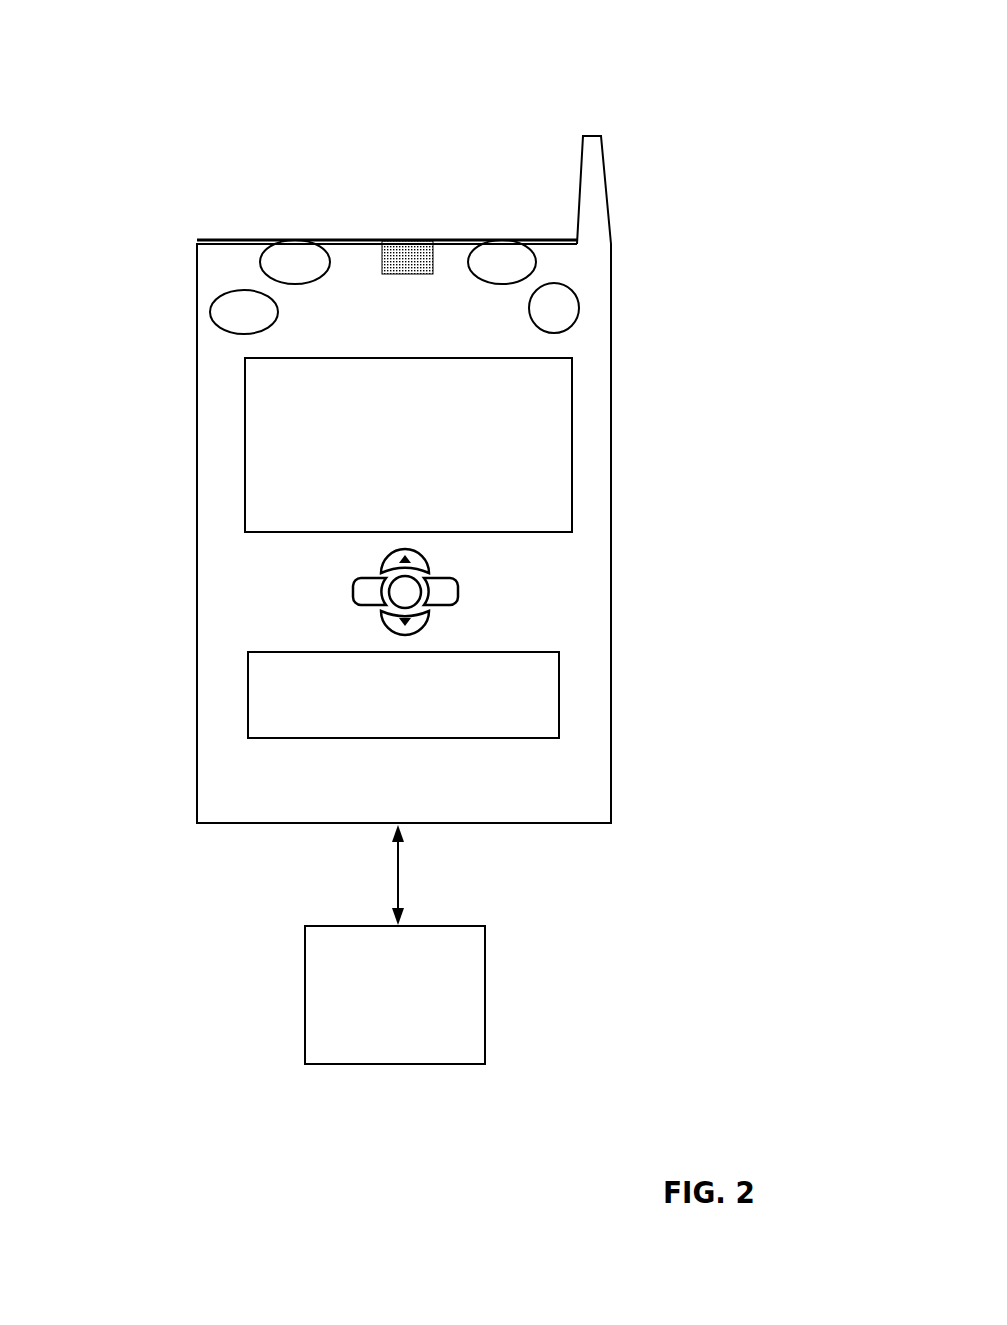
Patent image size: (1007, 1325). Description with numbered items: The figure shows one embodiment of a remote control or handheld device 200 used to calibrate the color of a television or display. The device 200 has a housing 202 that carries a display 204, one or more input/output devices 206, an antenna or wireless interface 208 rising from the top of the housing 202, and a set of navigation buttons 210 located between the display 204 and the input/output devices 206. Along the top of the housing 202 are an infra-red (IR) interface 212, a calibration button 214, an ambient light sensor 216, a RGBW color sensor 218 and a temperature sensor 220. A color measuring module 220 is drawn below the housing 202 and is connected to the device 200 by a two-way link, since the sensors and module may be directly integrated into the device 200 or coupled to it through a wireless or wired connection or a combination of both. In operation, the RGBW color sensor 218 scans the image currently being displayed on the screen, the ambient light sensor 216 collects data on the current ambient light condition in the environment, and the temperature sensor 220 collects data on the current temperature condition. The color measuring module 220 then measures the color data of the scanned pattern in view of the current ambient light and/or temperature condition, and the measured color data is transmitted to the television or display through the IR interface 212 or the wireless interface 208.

The handheld device 200 is at (256, 36).
The housing 202 is at (611, 490).
The display 204 is at (573, 393).
The input/output devices 206 is at (560, 687).
The wireless interface 208 is at (582, 163).
The navigation buttons 210 is at (460, 585).
The infra-red (IR) interface 212 is at (400, 238).
The calibration button 214 is at (580, 303).
The ambient light sensor 216 is at (533, 243).
The RGBW color sensor 218 is at (273, 240).
The color measuring module / temperature sensor 220 is at (213, 307).